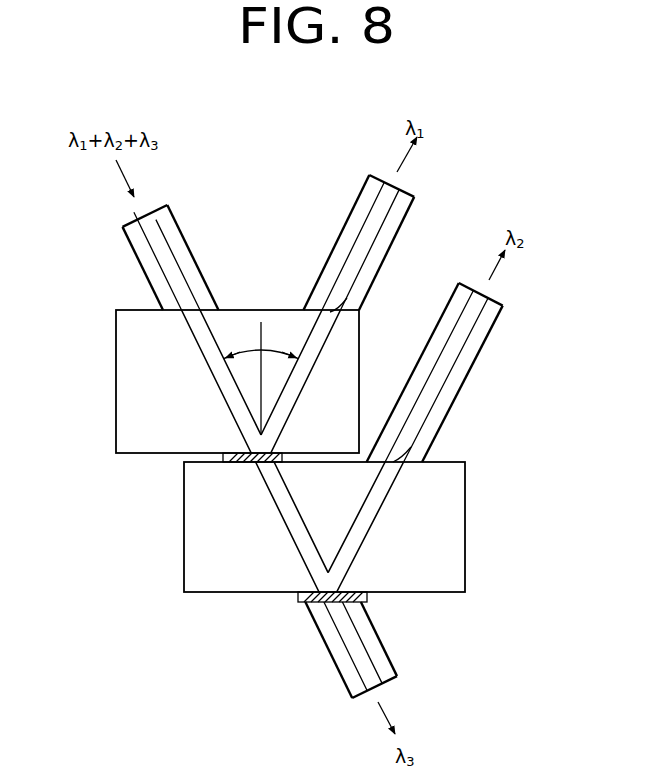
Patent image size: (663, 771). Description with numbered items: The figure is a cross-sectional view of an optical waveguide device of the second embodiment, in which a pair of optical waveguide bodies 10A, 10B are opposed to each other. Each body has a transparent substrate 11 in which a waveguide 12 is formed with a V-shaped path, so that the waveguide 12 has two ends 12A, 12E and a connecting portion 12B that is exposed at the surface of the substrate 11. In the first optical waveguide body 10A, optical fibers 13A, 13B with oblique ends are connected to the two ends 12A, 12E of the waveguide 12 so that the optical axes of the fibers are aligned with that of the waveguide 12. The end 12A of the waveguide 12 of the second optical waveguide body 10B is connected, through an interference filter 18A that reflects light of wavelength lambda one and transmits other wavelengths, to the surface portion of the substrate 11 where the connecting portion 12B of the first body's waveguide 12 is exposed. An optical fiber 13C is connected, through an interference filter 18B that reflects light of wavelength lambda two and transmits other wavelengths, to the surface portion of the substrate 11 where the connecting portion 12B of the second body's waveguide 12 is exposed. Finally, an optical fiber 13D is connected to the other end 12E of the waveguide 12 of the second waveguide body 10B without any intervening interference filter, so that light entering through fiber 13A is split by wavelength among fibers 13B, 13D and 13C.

The first optical waveguide body 10A is at (112, 370).
The second optical waveguide body 10B is at (468, 532).
The transparent substrate 11 is at (347, 372).
The waveguide 12 is at (329, 427).
The end of waveguide 12A is at (190, 306).
The connecting portion of waveguide 12B is at (258, 441).
The other end of waveguide 12E is at (355, 302).
The optical fiber 13A is at (188, 237).
The optical fiber 13B is at (350, 206).
The optical fiber 13C is at (375, 624).
The optical fiber 13D is at (471, 372).
The interference filter 18A is at (242, 463).
The interference filter 18B is at (303, 601).